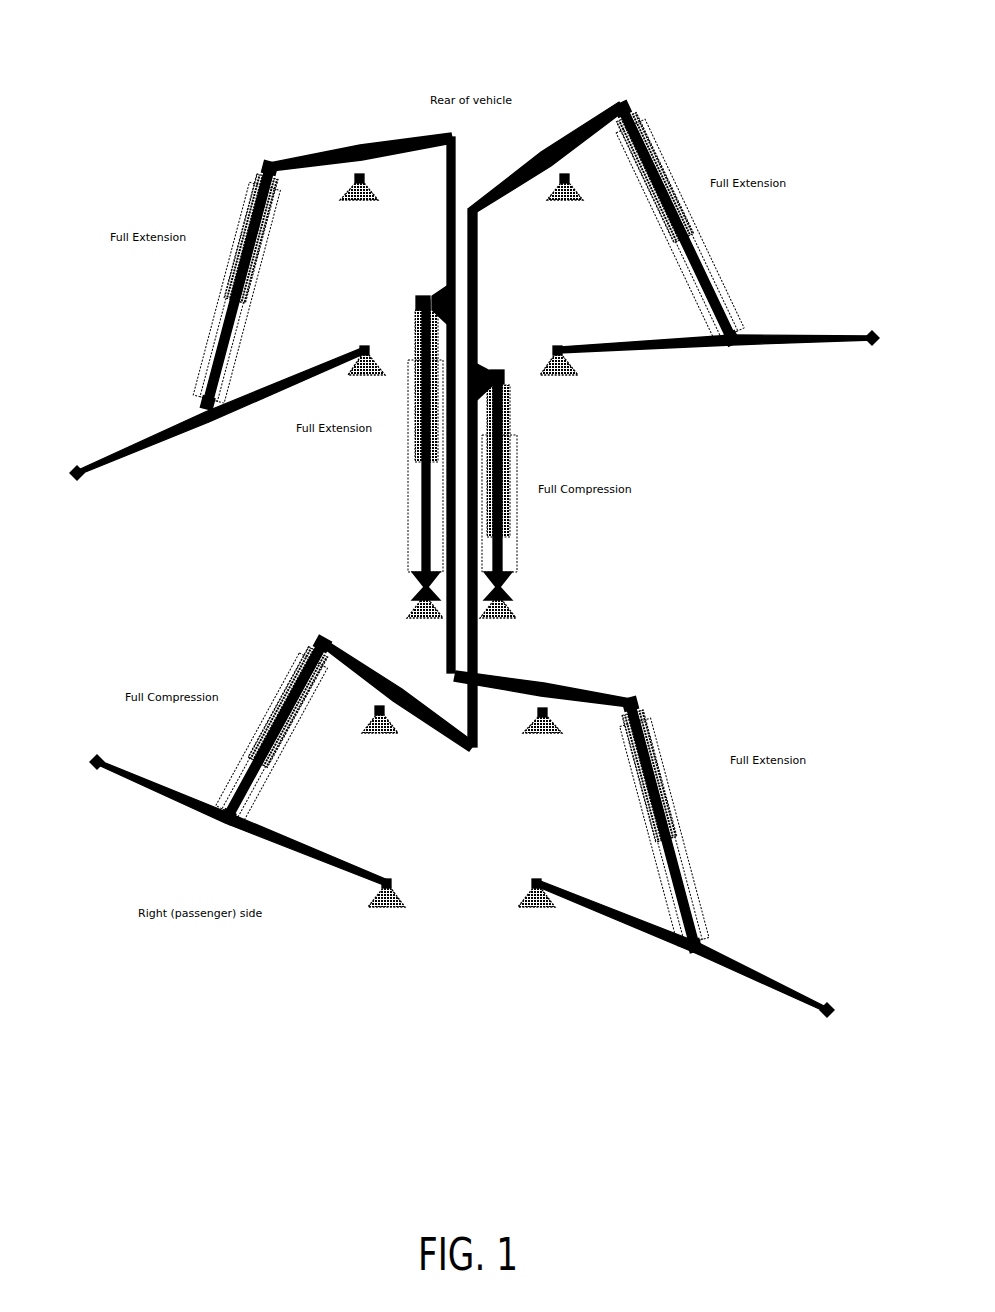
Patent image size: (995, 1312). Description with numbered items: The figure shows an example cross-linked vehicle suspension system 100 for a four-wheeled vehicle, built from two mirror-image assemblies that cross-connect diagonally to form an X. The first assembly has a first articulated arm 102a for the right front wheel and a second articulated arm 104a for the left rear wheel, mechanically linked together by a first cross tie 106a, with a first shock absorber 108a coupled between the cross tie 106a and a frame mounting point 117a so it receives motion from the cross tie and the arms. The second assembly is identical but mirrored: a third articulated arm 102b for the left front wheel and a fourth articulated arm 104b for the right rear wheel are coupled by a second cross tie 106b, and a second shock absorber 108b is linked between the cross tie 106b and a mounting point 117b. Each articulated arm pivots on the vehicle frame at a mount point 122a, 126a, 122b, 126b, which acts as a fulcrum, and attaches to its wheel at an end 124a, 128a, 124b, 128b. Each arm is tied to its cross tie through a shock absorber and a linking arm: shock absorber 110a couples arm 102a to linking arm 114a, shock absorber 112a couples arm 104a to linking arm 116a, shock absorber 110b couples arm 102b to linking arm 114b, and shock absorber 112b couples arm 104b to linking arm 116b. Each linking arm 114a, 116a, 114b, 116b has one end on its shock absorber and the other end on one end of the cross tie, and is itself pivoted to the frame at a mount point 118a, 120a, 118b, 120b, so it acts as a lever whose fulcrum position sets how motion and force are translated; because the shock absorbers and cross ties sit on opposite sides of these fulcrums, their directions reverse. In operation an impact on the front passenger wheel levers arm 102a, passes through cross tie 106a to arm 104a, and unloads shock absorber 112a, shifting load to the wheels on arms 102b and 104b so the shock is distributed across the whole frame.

The vehicle suspension system 100 is at (155, 48).
The first articulated arm 102a is at (178, 800).
The third articulated arm 102b is at (630, 928).
The second articulated arm 104a is at (665, 343).
The fourth articulated arm 104b is at (155, 430).
The first cross tie 106a is at (478, 645).
The second cross tie 106b is at (447, 252).
The first shock absorber 108a is at (503, 445).
The second shock absorber 108b is at (412, 490).
The shock absorber 110a is at (300, 665).
The shock absorber 110b is at (690, 818).
The shock absorber 112a is at (713, 247).
The shock absorber 112b is at (248, 203).
The linking arm 114a is at (430, 718).
The linking arm 114b is at (505, 686).
The linking arm 116a is at (553, 150).
The linking arm 116b is at (375, 150).
The vehicle frame or chassis mounting point 117a is at (507, 612).
The vehicle frame or chassis mounting point 117b is at (418, 603).
The mount point 118a is at (380, 735).
The mount point 118b is at (548, 735).
The mount point 120a is at (563, 200).
The mount point 120b is at (340, 198).
The mount point 122a is at (380, 909).
The mount point 122b is at (527, 909).
The end 124a is at (95, 767).
The end 124b is at (825, 1014).
The mount point 126a is at (570, 375).
The mount point 126b is at (360, 350).
The end 128a is at (872, 345).
The end 128b is at (78, 478).